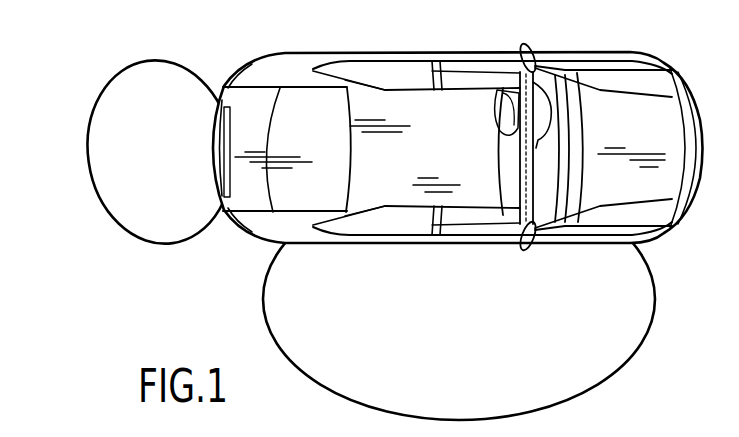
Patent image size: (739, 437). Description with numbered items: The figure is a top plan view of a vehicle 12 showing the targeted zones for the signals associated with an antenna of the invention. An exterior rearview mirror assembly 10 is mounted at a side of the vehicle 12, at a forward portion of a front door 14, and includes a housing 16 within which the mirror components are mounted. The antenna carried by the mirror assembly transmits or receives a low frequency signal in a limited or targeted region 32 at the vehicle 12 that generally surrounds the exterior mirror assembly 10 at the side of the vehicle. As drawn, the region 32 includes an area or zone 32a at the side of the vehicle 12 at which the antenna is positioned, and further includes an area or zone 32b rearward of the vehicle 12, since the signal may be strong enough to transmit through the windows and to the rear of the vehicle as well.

The exterior rearview mirror assembly 10 is at (508, 204).
The vehicle 12 is at (621, 22).
The front door 14 is at (491, 247).
The housing 16 is at (538, 245).
The targeted region 32 is at (351, 235).
The zone at the side of the vehicle 32a is at (421, 355).
The zone rearward of the vehicle 32b is at (195, 163).